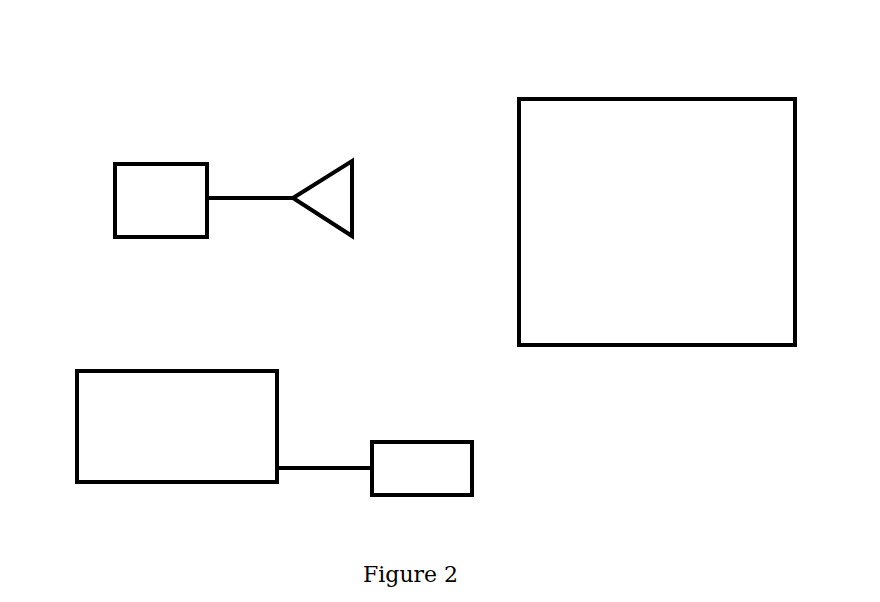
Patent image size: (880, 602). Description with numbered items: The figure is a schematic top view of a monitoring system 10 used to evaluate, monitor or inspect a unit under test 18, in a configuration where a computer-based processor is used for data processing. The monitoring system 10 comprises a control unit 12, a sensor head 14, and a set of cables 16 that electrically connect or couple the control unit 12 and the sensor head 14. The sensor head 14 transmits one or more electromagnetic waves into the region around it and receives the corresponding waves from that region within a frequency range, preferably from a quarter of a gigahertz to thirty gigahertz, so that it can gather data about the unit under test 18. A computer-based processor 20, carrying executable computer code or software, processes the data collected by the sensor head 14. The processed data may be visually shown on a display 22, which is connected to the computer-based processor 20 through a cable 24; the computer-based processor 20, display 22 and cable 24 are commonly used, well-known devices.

The monitoring system 10 is at (166, 104).
The control unit 12 is at (112, 190).
The sensor head 14 is at (318, 222).
The set of cables 16 is at (250, 190).
The unit under test 18 is at (671, 347).
The computer-based processor 20 is at (102, 368).
The display 22 is at (474, 462).
The cable 24 is at (307, 466).